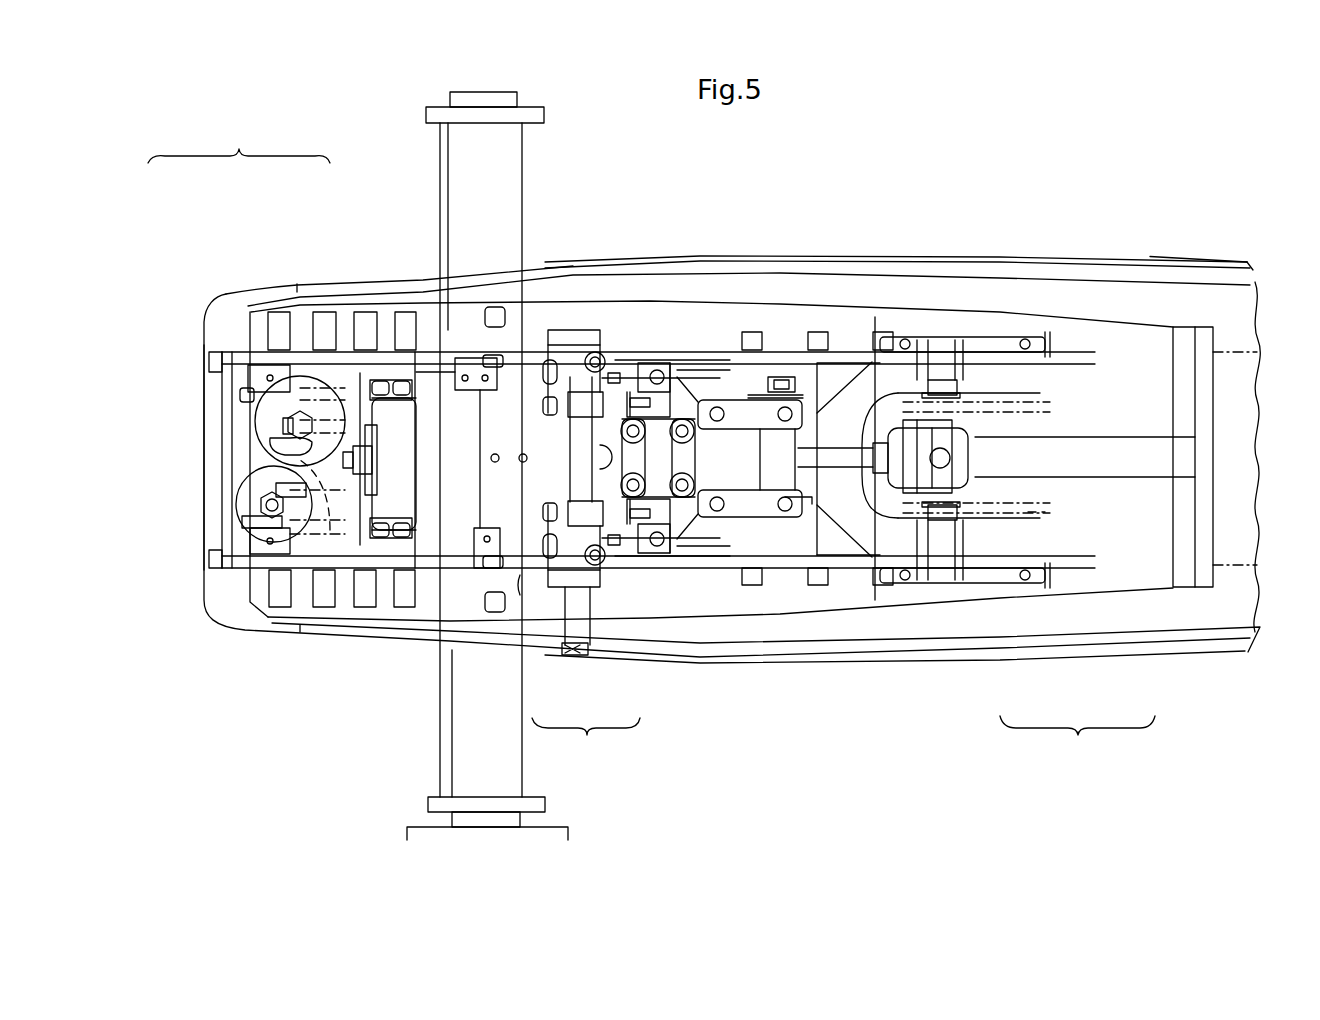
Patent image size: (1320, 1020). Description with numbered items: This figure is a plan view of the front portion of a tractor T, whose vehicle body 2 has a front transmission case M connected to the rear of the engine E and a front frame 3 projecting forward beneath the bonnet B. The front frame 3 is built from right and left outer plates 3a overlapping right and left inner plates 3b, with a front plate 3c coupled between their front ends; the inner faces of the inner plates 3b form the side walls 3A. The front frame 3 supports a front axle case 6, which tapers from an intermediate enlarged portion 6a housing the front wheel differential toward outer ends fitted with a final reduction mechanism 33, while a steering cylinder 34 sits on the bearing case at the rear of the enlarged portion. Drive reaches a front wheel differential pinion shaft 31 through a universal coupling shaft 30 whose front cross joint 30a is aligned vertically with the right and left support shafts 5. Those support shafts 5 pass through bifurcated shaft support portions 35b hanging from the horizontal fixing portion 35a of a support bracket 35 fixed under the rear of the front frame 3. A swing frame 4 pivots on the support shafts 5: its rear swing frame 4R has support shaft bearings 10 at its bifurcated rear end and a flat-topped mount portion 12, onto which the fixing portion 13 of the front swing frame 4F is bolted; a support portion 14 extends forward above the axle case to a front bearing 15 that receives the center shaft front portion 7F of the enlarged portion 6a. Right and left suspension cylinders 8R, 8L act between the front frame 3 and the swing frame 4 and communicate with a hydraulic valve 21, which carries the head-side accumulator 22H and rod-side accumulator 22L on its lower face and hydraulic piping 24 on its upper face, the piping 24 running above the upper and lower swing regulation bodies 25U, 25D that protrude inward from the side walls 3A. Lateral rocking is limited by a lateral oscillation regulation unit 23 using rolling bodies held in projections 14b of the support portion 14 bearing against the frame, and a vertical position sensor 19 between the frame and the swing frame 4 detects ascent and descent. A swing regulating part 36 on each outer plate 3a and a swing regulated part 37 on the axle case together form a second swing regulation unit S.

The vehicle body 2 is at (1246, 581).
The front frame 3 is at (239, 139).
The outer plate 3a is at (345, 360).
The inner plate 3b is at (303, 373).
The front plate 3c is at (202, 320).
The side wall 3A is at (375, 355).
The swing frame 4 is at (751, 526).
The front swing frame 4F is at (455, 508).
The rear swing frame 4R is at (828, 538).
The support shaft 5 is at (940, 345).
The front axle case 6 is at (434, 728).
The intermediate enlarged portion 6a is at (405, 500).
The center shaft front portion 7F is at (385, 475).
The right suspension cylinder 8R is at (646, 348).
The left suspension cylinder 8L is at (665, 556).
The support shaft bearing 10 is at (860, 377).
The mount portion 12 is at (733, 400).
The fixing portion 13 is at (798, 500).
The support portion 14 is at (555, 412).
The projection 14b is at (413, 383).
The front bearing 15 is at (463, 388).
The vertical position sensor 19 is at (787, 365).
The hydraulic valve 21 is at (247, 453).
The head-side accumulator 22H is at (253, 427).
The rod-side accumulator 22L is at (253, 473).
The lateral oscillation regulation unit 23 is at (404, 375).
The hydraulic piping 24 is at (327, 540).
The upper swing regulation body 25U is at (410, 405).
The lower swing regulation body 25D is at (410, 512).
The universal coupling shaft 30 is at (977, 450).
The cross joint 30a is at (1028, 510).
The front wheel differential pinion shaft 31 is at (963, 425).
The final reduction mechanism 33 is at (568, 827).
The steering cylinder 34 is at (606, 601).
The support bracket 35 is at (1077, 742).
The fixing portion 35a is at (1027, 587).
The shaft support portion 35b is at (1032, 512).
The swing regulating part 36 is at (574, 656).
The swing regulated part 37 is at (522, 585).
The second swing regulation unit S is at (586, 743).
The bonnet B is at (1012, 262).
The engine E is at (1105, 352).
The tractor T is at (1197, 246).
The front transmission case M is at (1255, 336).